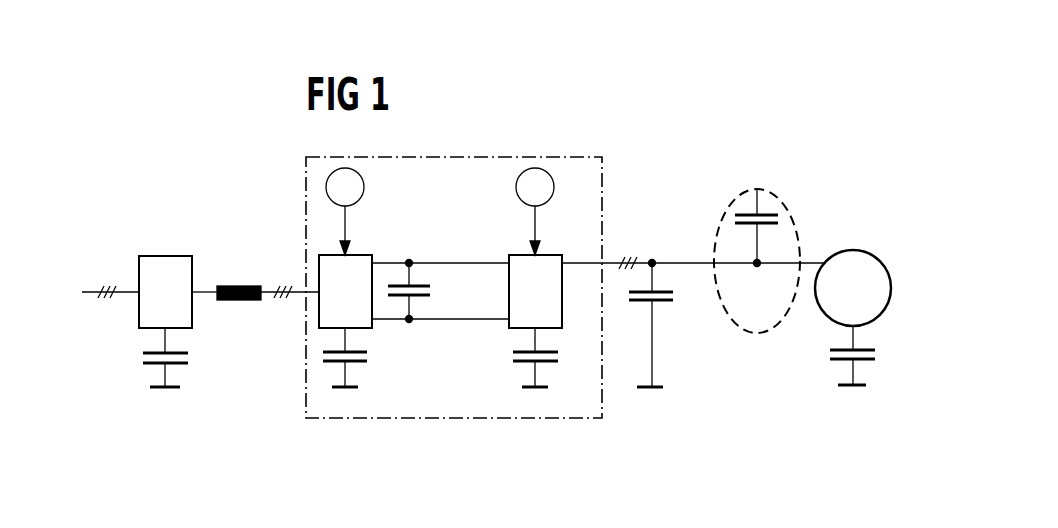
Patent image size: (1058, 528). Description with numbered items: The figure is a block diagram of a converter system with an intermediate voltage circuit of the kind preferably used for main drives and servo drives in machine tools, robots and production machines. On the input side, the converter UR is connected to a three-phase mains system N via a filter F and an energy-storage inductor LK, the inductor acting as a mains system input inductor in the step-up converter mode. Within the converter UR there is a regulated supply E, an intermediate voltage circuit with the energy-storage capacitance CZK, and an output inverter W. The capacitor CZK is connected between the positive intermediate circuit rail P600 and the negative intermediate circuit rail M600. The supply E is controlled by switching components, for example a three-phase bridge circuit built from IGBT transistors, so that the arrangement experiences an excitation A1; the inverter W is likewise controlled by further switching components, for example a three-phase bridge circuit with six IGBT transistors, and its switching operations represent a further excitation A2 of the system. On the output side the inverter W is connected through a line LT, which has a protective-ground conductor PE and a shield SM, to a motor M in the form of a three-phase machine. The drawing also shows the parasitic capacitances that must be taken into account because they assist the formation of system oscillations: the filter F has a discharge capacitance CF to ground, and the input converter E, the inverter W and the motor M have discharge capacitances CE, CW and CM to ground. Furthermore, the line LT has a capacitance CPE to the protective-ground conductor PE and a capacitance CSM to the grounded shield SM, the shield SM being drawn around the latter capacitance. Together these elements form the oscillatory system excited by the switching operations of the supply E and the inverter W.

The three-phase mains system N is at (99, 292).
The filter F is at (165, 292).
The energy-storage inductor LK is at (238, 285).
The discharge capacitance of the filter CF is at (143, 355).
The converter UR is at (576, 156).
The supply E is at (345, 291).
The output inverter W is at (535, 291).
The excitation A1 is at (345, 211).
The excitation A2 is at (535, 211).
The positive intermediate circuit rail P600 is at (440, 248).
The negative intermediate circuit rail M600 is at (440, 336).
The energy-storage capacitance CZK is at (432, 290).
The discharge capacitance of the input converter CE is at (358, 362).
The discharge capacitance of the inverter CW is at (511, 355).
The line LT is at (574, 262).
The capacitance to the protective-ground conductor CPE is at (663, 302).
The protective-ground conductor PE is at (670, 381).
The shield SM is at (737, 200).
The capacitance to the grounded shield CSM is at (780, 218).
The motor M is at (893, 290).
The discharge capacitance of the motor CM is at (878, 357).